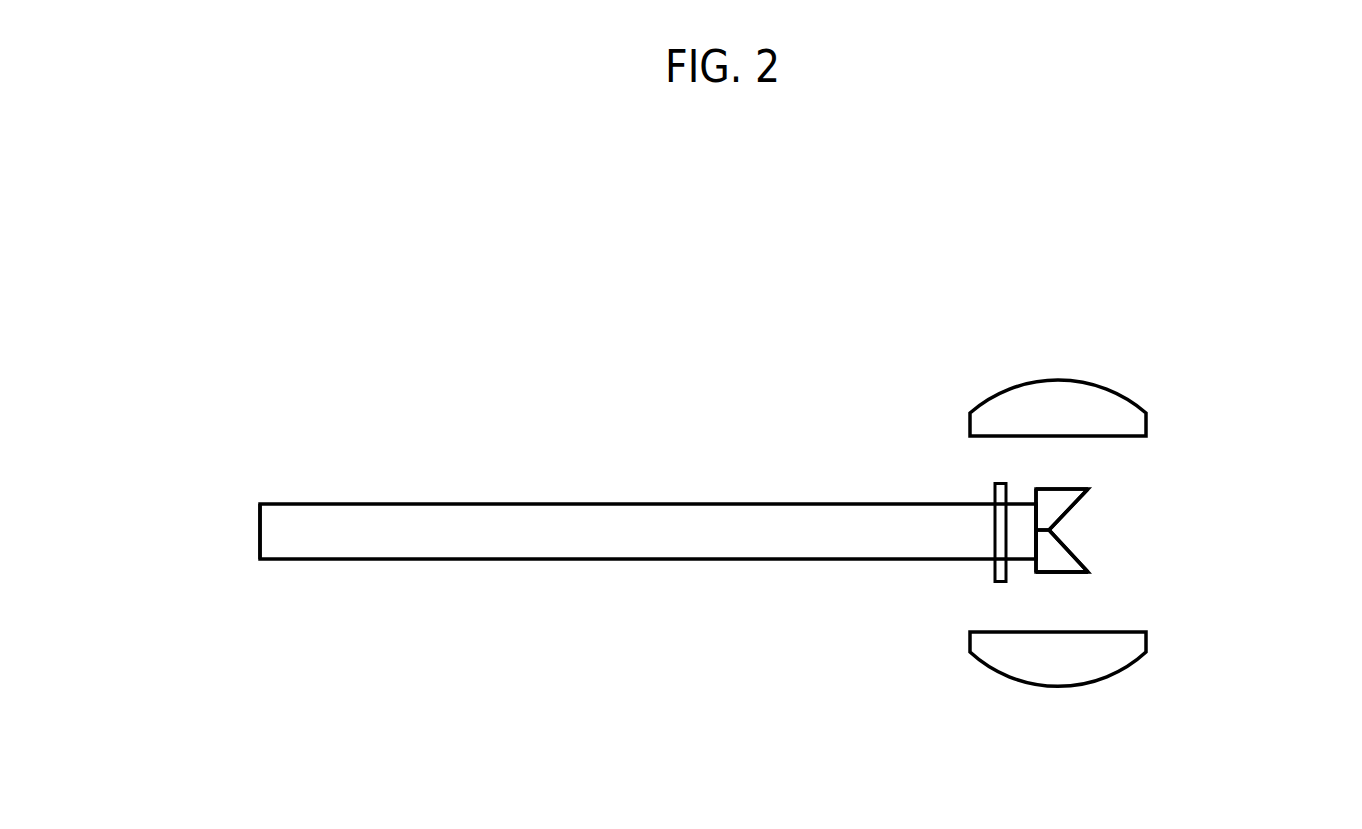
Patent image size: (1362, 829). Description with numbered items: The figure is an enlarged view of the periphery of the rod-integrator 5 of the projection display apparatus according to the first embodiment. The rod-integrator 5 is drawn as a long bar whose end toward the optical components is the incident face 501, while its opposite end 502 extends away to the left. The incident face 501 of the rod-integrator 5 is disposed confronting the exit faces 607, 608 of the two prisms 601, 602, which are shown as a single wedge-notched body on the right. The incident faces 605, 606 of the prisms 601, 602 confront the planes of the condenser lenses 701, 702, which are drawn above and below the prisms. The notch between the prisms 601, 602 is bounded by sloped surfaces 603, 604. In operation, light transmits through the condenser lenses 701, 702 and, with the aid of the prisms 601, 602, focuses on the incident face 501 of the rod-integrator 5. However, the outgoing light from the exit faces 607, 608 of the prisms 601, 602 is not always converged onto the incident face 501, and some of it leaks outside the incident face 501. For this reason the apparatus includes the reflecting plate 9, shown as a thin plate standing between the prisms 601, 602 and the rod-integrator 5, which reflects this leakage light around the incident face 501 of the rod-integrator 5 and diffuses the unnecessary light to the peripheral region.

The rod-integrator 5 is at (618, 543).
The incident face 501 is at (1036, 522).
The base end of arm 502 is at (258, 532).
The reflecting plate 9 is at (1000, 483).
The prism 601 is at (1058, 497).
The prism 602 is at (1058, 560).
The first reflecting surface 603 is at (1070, 512).
The second reflecting surface 604 is at (1070, 548).
The incident face 605 is at (1068, 489).
The incident face 606 is at (1083, 577).
The exit face 607 is at (1037, 496).
The exit face 608 is at (1037, 573).
The condenser lens 701 is at (1093, 398).
The condenser lens 702 is at (1102, 657).